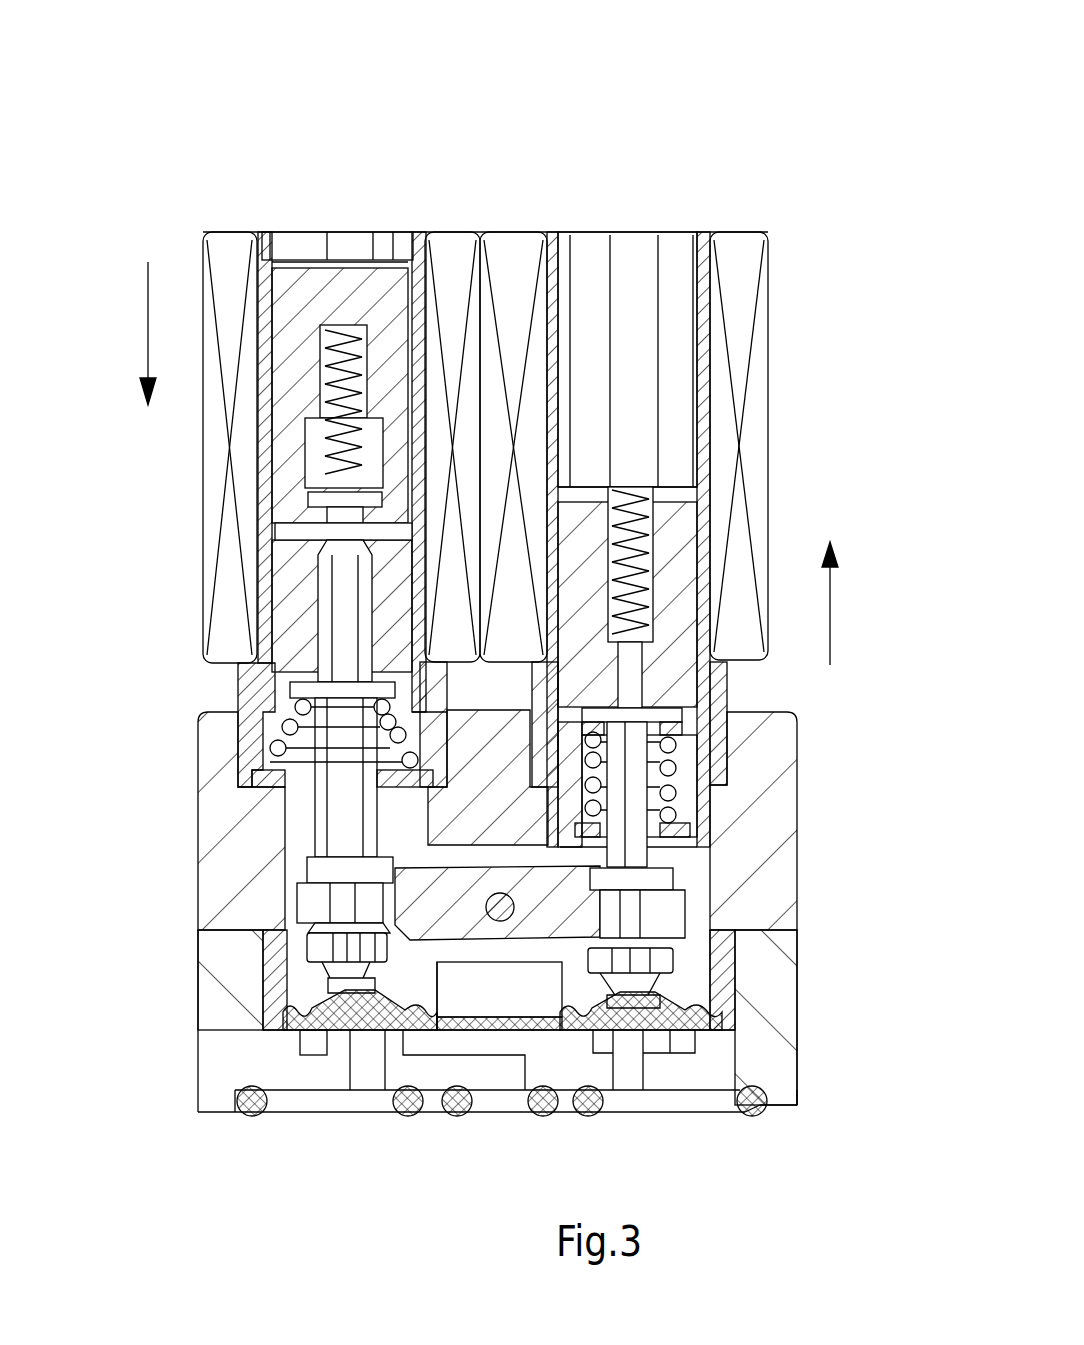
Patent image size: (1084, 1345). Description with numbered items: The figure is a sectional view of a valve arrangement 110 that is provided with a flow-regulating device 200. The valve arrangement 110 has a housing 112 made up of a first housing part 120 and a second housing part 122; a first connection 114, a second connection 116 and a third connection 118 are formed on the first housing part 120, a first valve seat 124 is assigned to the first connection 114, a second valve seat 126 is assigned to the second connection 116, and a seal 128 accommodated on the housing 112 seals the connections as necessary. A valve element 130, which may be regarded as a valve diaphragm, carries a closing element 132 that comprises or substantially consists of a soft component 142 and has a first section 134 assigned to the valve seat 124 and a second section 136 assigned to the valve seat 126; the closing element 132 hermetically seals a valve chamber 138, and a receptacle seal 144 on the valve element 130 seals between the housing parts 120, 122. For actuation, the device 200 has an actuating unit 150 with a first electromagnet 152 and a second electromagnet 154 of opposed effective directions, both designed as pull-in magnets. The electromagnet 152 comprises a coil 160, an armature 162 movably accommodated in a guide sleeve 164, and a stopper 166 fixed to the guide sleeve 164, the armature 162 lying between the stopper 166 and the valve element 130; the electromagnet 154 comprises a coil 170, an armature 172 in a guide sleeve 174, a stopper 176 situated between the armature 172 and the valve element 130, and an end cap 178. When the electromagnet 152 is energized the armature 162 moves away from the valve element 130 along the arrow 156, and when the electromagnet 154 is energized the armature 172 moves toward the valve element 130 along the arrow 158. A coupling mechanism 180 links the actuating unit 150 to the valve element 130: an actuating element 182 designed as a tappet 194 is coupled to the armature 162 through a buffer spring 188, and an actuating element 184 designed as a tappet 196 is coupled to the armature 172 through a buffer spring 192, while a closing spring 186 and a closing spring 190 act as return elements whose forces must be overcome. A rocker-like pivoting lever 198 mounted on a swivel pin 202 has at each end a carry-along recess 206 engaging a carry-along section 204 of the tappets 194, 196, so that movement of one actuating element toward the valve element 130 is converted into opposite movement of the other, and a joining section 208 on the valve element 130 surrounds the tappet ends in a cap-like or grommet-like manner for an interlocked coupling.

The valve arrangement 110 is at (810, 1080).
The housing 112 is at (185, 1107).
The first connection 114 is at (633, 1060).
The second connection 116 is at (363, 1077).
The third connection 118 is at (483, 1077).
The first housing part 120 is at (235, 945).
The second housing part 122 is at (217, 757).
The first valve seat 124 is at (720, 1038).
The second valve seat 126 is at (345, 1040).
The seal 128 is at (758, 1108).
The valve element 130 is at (507, 1055).
The closing element 132 is at (305, 1060).
The first section 134 is at (640, 1022).
The second section 136 is at (372, 1008).
The valve chamber 138 is at (560, 1035).
The soft component 142 is at (457, 1025).
The receptacle seal 144 is at (687, 1015).
The actuating unit 150 is at (504, 434).
The first electromagnet 152 is at (721, 458).
The second electromagnet 154 is at (270, 463).
The arrow 156 is at (832, 620).
The arrow 158 is at (146, 300).
The coil 160 is at (486, 396).
The armature 162 is at (683, 555).
The guide sleeve 164 is at (735, 270).
The stopper 166 is at (668, 245).
The coil 170 is at (455, 250).
The armature 172 is at (383, 290).
The guide sleeve 174 is at (266, 360).
The stopper 176 is at (300, 600).
The end cap 178 is at (290, 255).
The coupling mechanism 180 is at (335, 795).
The actuating element 182 is at (655, 850).
The actuating element 184 is at (285, 790).
The closing spring 186 is at (650, 535).
The buffer spring 188 is at (668, 762).
The closing spring 190 is at (258, 719).
The buffer spring 192 is at (318, 440).
The tappet 194 is at (690, 738).
The tappet 196 is at (338, 570).
The pivoting lever 198 is at (320, 868).
The flow-regulating device 200 is at (434, 140).
The swivel pin 202 is at (655, 940).
The carry-along section 204 is at (406, 850).
The carry-along recess 206 is at (300, 905).
The joining section 208 is at (330, 975).